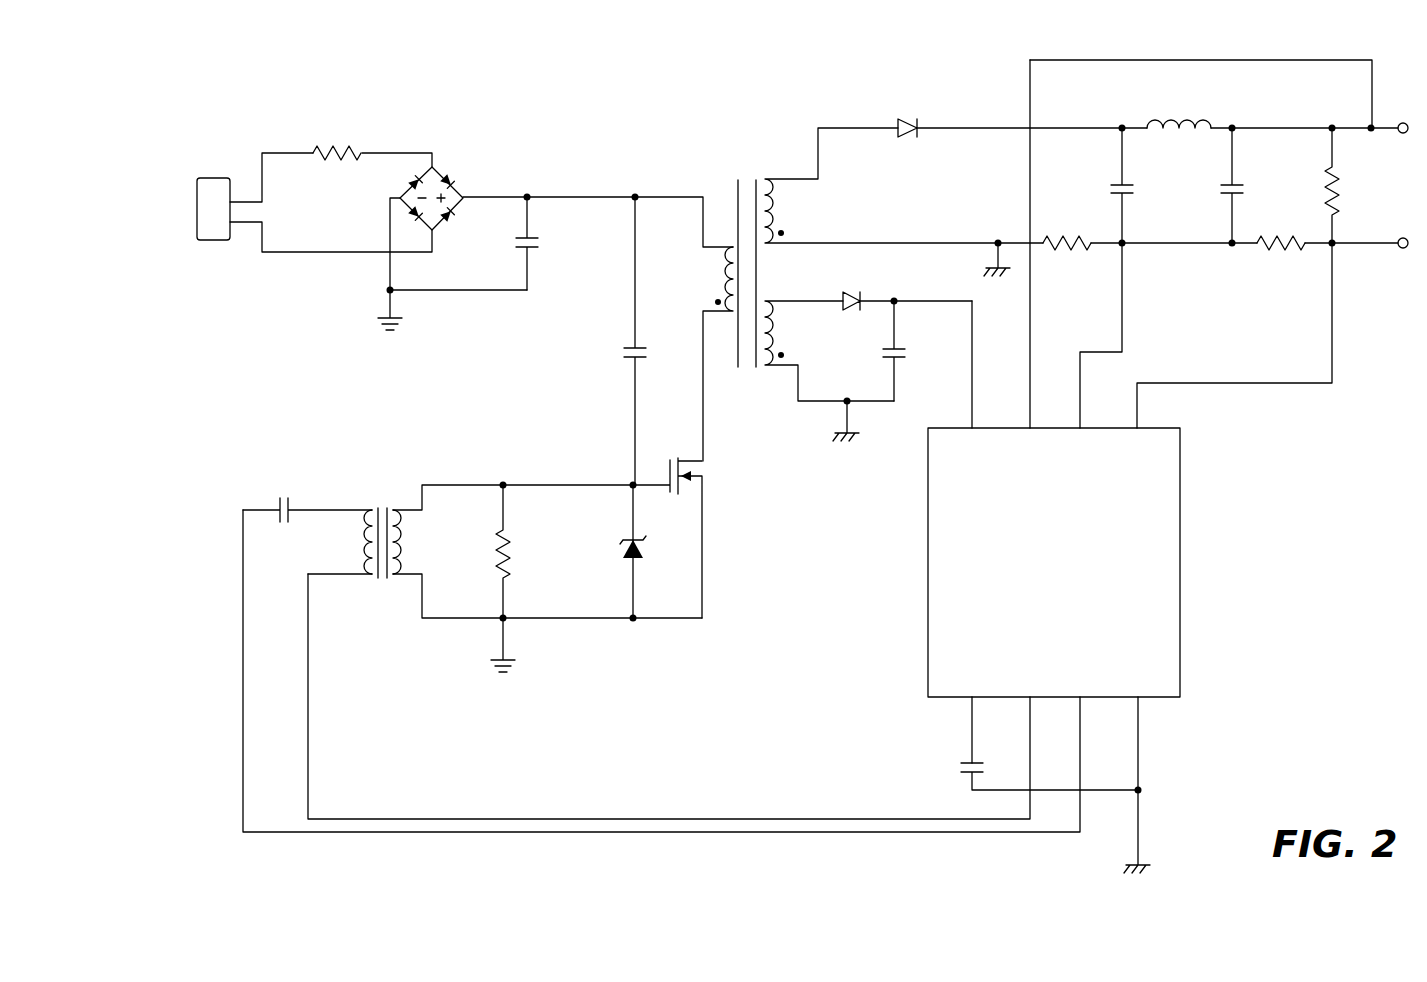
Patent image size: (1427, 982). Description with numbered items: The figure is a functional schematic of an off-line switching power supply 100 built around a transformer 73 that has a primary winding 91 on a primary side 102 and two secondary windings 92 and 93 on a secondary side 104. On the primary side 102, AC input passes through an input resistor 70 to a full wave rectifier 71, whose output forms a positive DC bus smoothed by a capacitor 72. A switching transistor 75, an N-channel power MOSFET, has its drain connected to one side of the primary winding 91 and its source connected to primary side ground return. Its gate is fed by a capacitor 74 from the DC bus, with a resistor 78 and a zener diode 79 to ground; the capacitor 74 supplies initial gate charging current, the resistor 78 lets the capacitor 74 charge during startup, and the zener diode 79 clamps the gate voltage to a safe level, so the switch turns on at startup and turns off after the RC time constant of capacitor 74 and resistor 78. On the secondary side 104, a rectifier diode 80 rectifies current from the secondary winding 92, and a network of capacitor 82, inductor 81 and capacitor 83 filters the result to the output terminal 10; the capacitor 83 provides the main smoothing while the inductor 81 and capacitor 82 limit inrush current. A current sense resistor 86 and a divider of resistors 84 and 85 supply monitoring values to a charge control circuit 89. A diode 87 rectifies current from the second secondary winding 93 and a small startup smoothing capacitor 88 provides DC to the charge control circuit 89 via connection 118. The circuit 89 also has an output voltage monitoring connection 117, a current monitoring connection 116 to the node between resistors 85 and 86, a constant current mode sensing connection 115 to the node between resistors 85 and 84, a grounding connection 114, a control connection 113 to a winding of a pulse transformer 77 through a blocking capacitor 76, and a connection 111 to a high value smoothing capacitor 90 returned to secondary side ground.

The output terminals 10 is at (1404, 123).
The resistor R1 70 is at (336, 146).
The full wave rectifier 71 is at (466, 195).
The capacitor C1 72 is at (538, 250).
The transformer 73 is at (738, 180).
The capacitor 74 is at (640, 348).
The switching transistor 75 is at (705, 476).
The blocking capacitor 76 is at (278, 505).
The pulse transformer 77 is at (382, 510).
The resistor 78 is at (508, 576).
The zener diode 79 is at (642, 555).
The rectifier diode 80 is at (905, 120).
The inductor 81 is at (1200, 122).
The capacitor 82 is at (1117, 184).
The capacitor 83 is at (1240, 185).
The resistor 84 is at (1340, 213).
The resistor 85 is at (1262, 248).
The current sense resistor 86 is at (1063, 240).
The diode 87 is at (848, 293).
The startup smoothing capacitor 88 is at (900, 349).
The charge control circuit 89 is at (1180, 618).
The smoothing capacitor 90 is at (961, 763).
The primary winding 91 is at (718, 282).
The secondary winding 92 is at (786, 222).
The second secondary winding 93 is at (783, 343).
The switching power supply 100 is at (1000, 856).
The primary side 102 is at (468, 100).
The secondary side 104 is at (830, 100).
The connection 111 is at (972, 713).
The control connection 113 is at (1080, 775).
The grounding connection 114 is at (1138, 762).
The constant current mode sensing connection 115 is at (1137, 400).
The current monitoring connection 116 is at (1080, 395).
The output voltage monitoring connection 117 is at (1030, 390).
The connection 118 is at (972, 345).